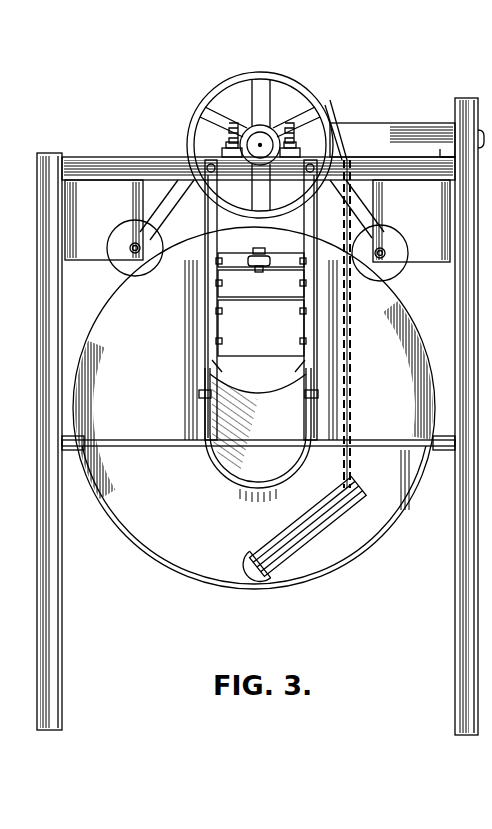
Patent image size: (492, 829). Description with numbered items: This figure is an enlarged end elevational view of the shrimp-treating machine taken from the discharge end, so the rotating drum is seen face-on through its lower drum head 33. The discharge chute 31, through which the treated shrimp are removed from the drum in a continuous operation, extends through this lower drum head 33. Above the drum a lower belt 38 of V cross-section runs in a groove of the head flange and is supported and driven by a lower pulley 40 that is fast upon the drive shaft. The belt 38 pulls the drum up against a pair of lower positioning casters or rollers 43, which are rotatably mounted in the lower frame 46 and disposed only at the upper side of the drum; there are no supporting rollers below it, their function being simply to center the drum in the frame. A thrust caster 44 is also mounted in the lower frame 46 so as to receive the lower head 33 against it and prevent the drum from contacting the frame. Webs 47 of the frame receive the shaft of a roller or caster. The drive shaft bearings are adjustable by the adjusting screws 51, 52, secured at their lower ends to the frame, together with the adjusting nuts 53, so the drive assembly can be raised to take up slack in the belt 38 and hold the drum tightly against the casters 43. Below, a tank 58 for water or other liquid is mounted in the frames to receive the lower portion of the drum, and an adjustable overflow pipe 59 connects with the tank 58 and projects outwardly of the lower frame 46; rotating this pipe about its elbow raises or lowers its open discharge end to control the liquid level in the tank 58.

The discharge chute 31 is at (275, 459).
The lower drum head 33 is at (383, 404).
The lower belt 38 is at (186, 146).
The lower pulley 40 is at (264, 91).
The lower positioning casters or rollers 43 is at (120, 278).
The thrust caster 44 is at (270, 257).
The lower frame 46 is at (37, 325).
The web 47 is at (104, 216).
The adjusting screw 51 is at (223, 116).
The adjusting screw 52 is at (312, 114).
The upper adjusting nuts 53 is at (392, 140).
The tank 58 is at (148, 542).
The adjustable overflow pipe 59 is at (327, 530).